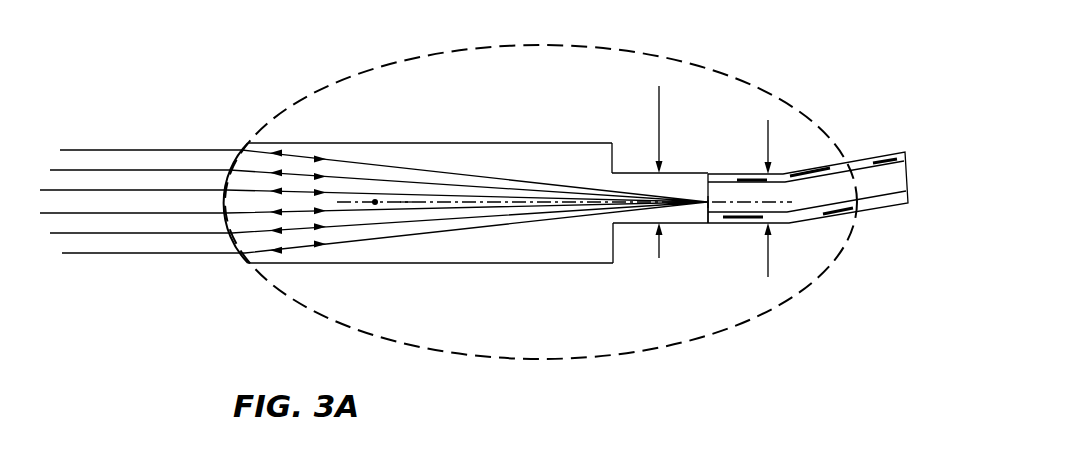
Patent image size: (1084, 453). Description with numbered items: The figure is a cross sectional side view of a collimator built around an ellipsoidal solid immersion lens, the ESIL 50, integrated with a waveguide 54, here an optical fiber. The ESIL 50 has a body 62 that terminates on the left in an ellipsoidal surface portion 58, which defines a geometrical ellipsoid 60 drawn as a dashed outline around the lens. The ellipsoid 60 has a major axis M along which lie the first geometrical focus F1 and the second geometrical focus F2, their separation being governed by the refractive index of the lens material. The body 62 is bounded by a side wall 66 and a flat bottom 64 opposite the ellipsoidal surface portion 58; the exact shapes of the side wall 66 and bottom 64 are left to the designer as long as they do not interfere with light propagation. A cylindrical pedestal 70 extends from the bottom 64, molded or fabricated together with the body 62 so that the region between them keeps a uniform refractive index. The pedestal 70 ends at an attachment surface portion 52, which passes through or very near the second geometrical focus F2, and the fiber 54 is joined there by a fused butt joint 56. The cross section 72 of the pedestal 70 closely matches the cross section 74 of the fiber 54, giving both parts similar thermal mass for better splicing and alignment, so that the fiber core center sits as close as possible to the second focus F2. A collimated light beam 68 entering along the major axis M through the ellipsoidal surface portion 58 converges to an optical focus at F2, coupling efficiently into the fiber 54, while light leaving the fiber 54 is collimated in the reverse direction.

The ESIL 50 is at (232, 53).
The attachment surface portion 52 is at (710, 223).
The waveguide 54 is at (872, 208).
The fused butt joint 56 is at (708, 176).
The ellipsoidal surface portion 58 is at (248, 143).
The geometrical ellipsoid 60 is at (383, 67).
The body 62 is at (515, 244).
The flat bottom 64 is at (616, 248).
The side wall 66 is at (436, 143).
The collimated light beam 68 is at (190, 288).
The pedestal 70 is at (626, 173).
The cross section 72 is at (658, 104).
The cross section 74 is at (769, 240).
The first geometrical focus F1 is at (373, 201).
The second geometrical focus F2 is at (713, 200).
The major axis M is at (406, 203).